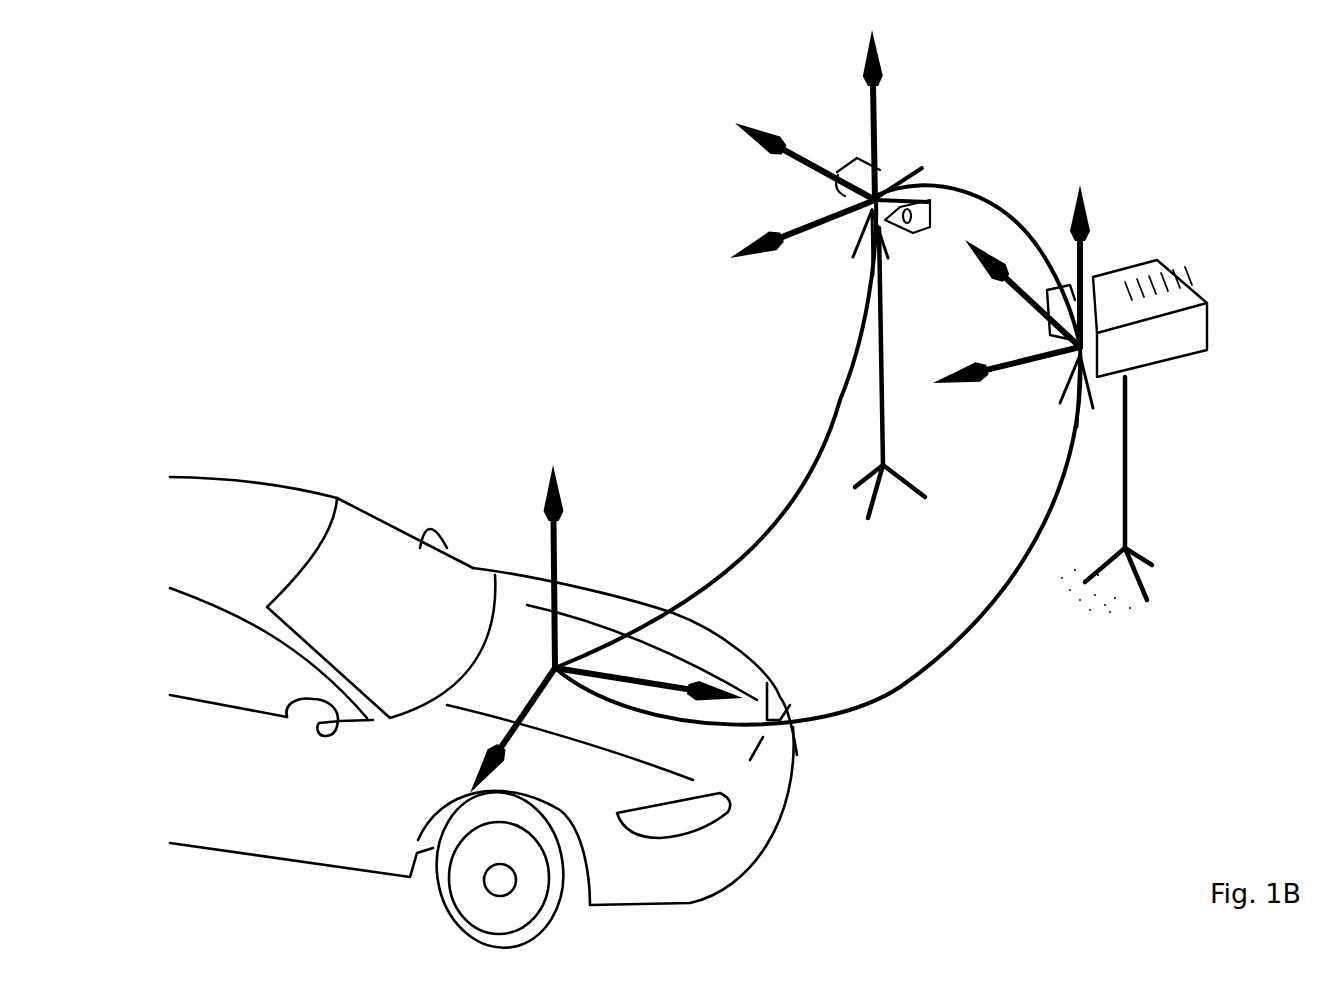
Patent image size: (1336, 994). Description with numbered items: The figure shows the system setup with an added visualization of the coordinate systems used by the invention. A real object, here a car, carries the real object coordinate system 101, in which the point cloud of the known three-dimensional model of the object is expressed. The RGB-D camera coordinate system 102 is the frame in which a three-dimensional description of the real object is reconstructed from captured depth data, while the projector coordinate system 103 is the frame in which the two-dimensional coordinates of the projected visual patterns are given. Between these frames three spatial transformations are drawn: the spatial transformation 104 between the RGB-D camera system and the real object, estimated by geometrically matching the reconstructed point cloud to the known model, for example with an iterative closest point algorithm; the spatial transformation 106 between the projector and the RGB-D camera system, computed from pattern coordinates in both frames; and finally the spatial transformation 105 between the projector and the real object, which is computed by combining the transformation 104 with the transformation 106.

The real object coordinate system 101 is at (555, 665).
The RGB-D camera coordinate system 102 is at (882, 190).
The projector coordinate system 103 is at (1085, 340).
The spatial transformation between the RGB-D camera system and the real object 104 is at (747, 555).
The spatial transformation between the projector and the real object 105 is at (950, 650).
The spatial transformation between the projector and the RGB-D camera system 106 is at (1010, 218).